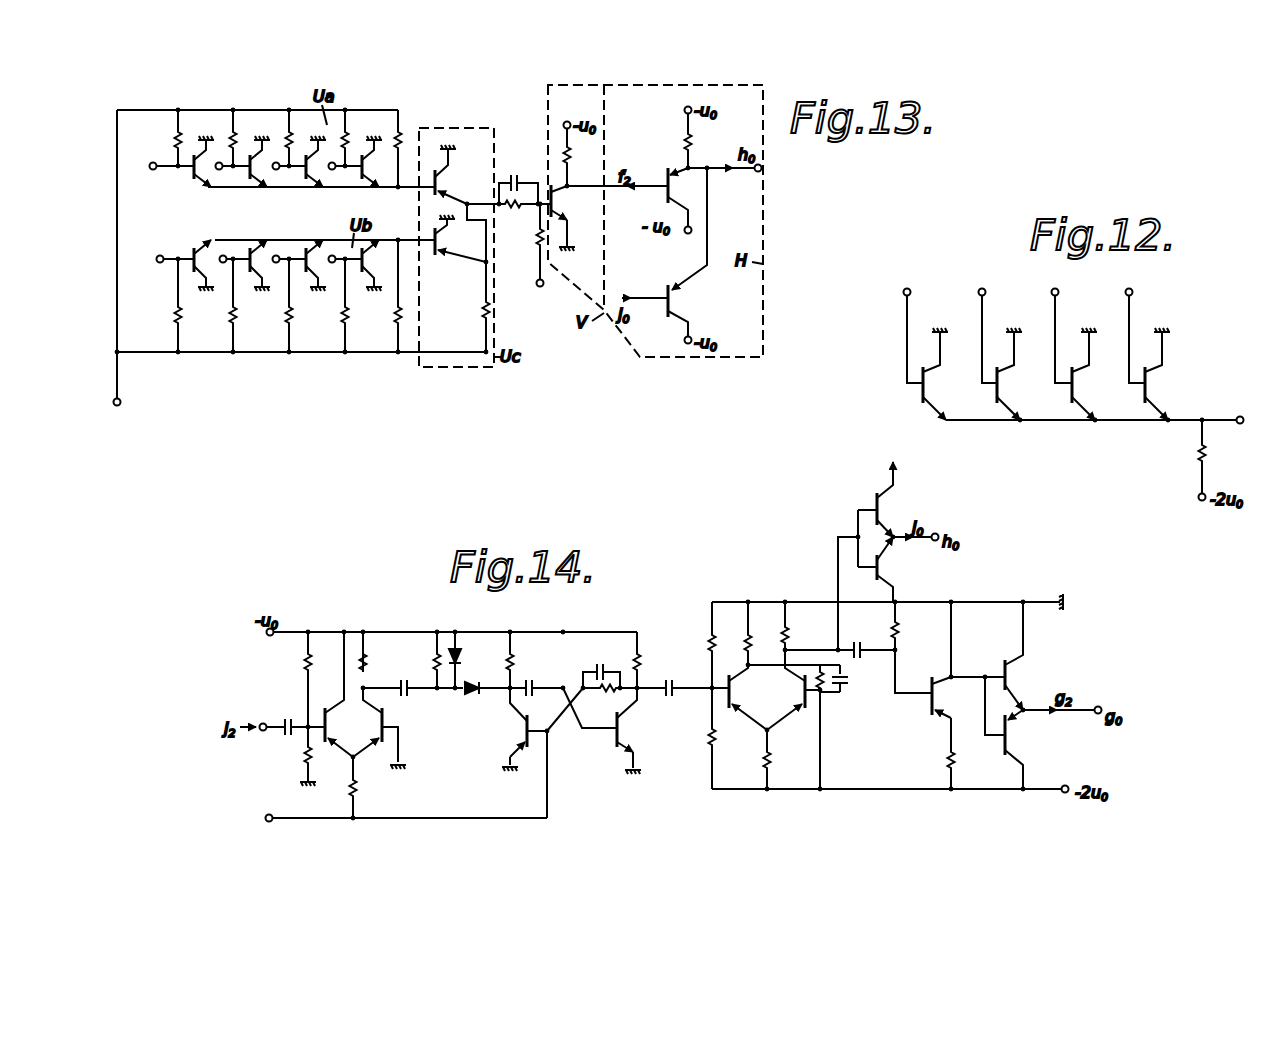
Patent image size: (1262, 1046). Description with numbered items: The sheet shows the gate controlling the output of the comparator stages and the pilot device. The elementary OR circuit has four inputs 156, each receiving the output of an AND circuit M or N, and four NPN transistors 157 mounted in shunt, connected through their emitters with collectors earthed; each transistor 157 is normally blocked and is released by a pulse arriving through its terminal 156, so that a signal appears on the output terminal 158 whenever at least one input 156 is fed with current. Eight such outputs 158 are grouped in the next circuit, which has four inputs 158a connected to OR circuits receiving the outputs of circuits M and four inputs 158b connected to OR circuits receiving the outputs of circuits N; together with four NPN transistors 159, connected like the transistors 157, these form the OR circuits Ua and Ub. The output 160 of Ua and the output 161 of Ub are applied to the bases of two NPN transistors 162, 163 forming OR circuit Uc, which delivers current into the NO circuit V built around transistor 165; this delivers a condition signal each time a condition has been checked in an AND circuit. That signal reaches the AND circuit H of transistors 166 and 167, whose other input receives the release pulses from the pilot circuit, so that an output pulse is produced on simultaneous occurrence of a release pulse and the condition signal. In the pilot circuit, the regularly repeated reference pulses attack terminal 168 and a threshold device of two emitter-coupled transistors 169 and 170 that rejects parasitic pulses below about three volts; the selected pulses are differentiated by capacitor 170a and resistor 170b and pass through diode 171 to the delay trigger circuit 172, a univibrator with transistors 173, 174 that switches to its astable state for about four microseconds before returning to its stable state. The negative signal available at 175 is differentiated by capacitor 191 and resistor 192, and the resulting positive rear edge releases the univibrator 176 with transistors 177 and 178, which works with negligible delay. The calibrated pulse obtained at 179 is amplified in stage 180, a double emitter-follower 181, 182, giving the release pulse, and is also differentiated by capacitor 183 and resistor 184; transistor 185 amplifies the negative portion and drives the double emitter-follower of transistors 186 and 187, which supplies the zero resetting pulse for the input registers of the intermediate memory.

In FIG. 12, the input 156 is at (980, 289).
In FIG. 12, the NPN transistor 157 is at (993, 389).
In FIG. 12, the output terminal 158 is at (1101, 413).
In FIG. 13, the input 158a is at (153, 163).
In FIG. 13, the input 158b is at (222, 256).
In FIG. 13, the NPN transistor 159 is at (193, 178).
In FIG. 13, the output of circuit Ua 160 is at (321, 199).
In FIG. 13, the output of circuit Ub 161 is at (399, 252).
In FIG. 13, the NPN transistor 162 is at (454, 175).
In FIG. 13, the NPN transistor 163 is at (461, 239).
In FIG. 13, the transistor 165 is at (549, 182).
In FIG. 13, the transistor 166 is at (686, 201).
In FIG. 13, the transistor 167 is at (664, 256).
In FIG. 14, the terminal 168 is at (268, 720).
In FIG. 14, the transistor 169 is at (343, 694).
In FIG. 14, the transistor 170 is at (386, 700).
In FIG. 14, the capacitor 170a is at (399, 682).
In FIG. 14, the resistor 170b is at (437, 661).
In FIG. 14, the diode 171 is at (473, 663).
In FIG. 14, the delay trigger circuit 172 is at (612, 718).
In FIG. 14, the transistor 173 is at (535, 725).
In FIG. 14, the transistor 174 is at (636, 731).
In FIG. 14, the output point 175 is at (640, 686).
In FIG. 14, the univibrator 176 is at (800, 709).
In FIG. 14, the transistor 177 is at (740, 697).
In FIG. 14, the transistor 178 is at (792, 757).
In FIG. 14, the output point 179 is at (804, 627).
In FIG. 14, the amplifying stage 180 is at (887, 545).
In FIG. 14, the emitter-follower transistor 181 is at (886, 499).
In FIG. 14, the emitter-follower transistor 182 is at (888, 569).
In FIG. 14, the capacitor 183 is at (841, 642).
In FIG. 14, the resistor 184 is at (914, 647).
In FIG. 14, the transistor 185 is at (959, 695).
In FIG. 14, the transistor 186 is at (1031, 657).
In FIG. 14, the transistor 187 is at (1023, 733).
In FIG. 14, the capacitor 191 is at (674, 703).
In FIG. 14, the resistor 192 is at (711, 647).